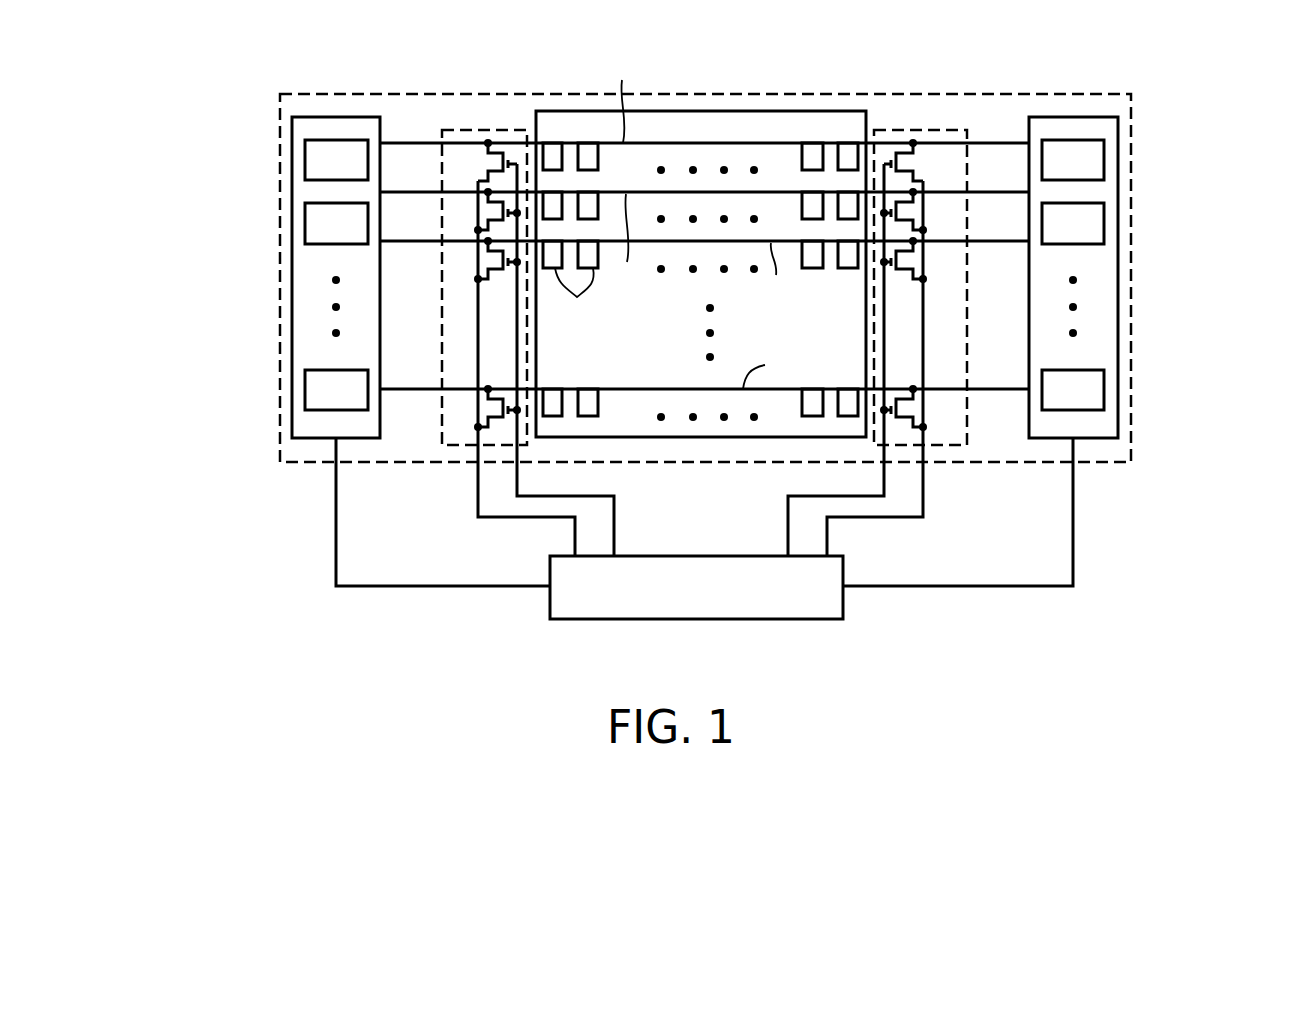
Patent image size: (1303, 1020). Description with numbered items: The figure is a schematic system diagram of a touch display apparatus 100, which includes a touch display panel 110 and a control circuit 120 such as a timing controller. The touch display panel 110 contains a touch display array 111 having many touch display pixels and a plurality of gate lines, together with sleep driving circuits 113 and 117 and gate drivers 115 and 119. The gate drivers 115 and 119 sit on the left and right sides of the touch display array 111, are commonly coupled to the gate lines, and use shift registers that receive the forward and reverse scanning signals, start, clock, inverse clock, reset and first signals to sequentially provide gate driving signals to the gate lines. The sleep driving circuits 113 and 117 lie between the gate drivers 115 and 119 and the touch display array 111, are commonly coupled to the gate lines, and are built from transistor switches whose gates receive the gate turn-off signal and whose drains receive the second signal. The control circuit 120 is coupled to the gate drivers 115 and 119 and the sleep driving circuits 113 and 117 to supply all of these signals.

The touch display apparatus 100 is at (701, 345).
The touch display panel 110 is at (701, 296).
The touch display array 111 is at (700, 111).
The sleep driving circuit 113 is at (485, 130).
The gate driver 115 is at (337, 117).
The sleep driving circuit 117 is at (920, 130).
The gate driver 119 is at (1073, 117).
The control circuit 120 is at (843, 605).